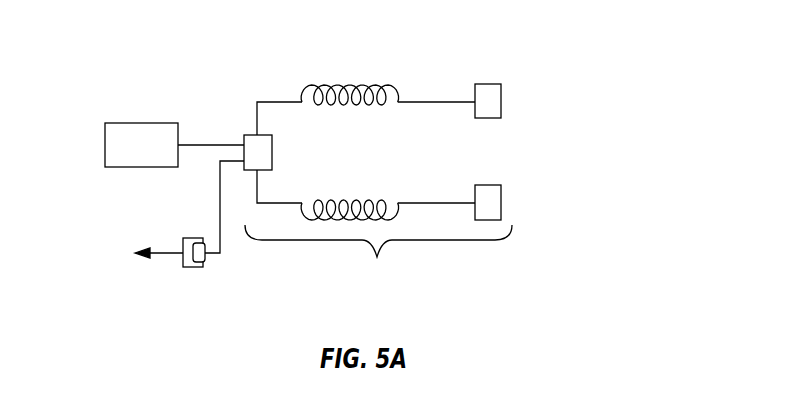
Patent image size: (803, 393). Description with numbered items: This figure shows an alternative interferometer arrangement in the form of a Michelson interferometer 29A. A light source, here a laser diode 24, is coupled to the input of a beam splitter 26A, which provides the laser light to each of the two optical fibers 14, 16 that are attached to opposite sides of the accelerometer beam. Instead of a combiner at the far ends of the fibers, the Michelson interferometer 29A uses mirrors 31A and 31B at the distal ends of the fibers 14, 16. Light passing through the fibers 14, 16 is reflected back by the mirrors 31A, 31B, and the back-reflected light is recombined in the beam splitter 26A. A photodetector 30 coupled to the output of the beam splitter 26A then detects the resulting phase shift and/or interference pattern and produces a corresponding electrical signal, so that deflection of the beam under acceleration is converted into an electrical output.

The laser diode 24 is at (121, 123).
The beam splitter 26A is at (272, 155).
The optical fiber 16 is at (375, 86).
The optical fiber 14 is at (368, 200).
The mirror 31A is at (488, 84).
The mirror 31B is at (488, 185).
The Michelson interferometer 29A is at (378, 258).
The photodetector 30 is at (197, 238).